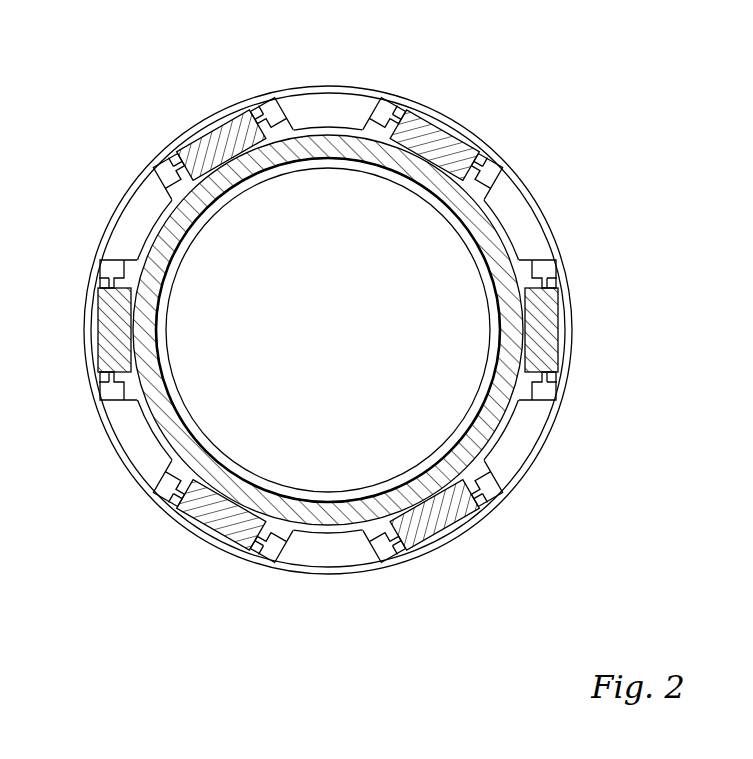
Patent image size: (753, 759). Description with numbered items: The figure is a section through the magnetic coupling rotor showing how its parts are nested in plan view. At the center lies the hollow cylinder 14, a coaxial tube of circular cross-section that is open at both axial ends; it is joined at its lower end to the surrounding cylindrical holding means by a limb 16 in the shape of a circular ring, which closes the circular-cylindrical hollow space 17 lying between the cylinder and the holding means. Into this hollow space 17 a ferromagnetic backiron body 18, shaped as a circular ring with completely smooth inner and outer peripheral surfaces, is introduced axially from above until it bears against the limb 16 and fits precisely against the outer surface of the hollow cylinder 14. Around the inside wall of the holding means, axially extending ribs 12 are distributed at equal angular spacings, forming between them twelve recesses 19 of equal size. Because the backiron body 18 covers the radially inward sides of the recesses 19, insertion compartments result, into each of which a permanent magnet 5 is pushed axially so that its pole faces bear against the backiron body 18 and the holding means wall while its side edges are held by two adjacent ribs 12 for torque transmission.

The permanent magnet 5 is at (232, 130).
The rib 12 is at (272, 100).
The hollow cylinder 14 is at (165, 312).
The limb 16 is at (499, 226).
The circular-cylindrical hollow space 17 is at (520, 385).
The backiron body 18 is at (487, 237).
The recess 19 is at (332, 108).